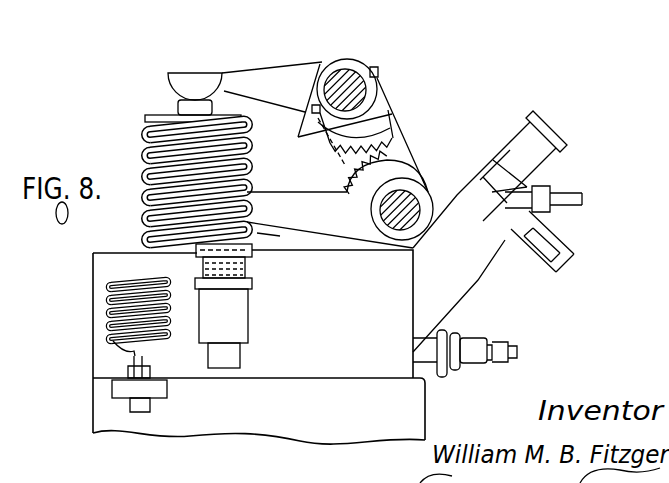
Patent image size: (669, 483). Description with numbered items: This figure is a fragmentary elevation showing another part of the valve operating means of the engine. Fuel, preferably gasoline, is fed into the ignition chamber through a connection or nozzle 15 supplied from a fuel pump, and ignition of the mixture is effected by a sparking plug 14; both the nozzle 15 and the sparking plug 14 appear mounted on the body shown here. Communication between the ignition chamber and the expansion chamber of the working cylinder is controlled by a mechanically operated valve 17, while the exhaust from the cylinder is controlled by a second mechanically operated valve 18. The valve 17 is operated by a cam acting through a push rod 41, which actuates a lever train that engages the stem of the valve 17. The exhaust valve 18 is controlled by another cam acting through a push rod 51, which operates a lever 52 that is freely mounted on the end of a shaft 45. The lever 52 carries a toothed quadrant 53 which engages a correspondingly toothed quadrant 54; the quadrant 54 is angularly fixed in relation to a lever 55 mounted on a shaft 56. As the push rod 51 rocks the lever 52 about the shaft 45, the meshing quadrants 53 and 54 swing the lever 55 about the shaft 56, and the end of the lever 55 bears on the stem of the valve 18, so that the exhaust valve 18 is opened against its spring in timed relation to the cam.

The sparking plug 14 is at (477, 340).
The connection or nozzle 15 is at (547, 173).
The mechanically operated valve 17 is at (281, 237).
The mechanically operated valve 18 is at (177, 112).
The push rod 41 is at (232, 366).
The shaft 45 is at (405, 210).
The push rod 51 is at (252, 268).
The lever 52 is at (250, 201).
The toothed quadrant 53 is at (397, 152).
The toothed quadrant 54 is at (393, 125).
The lever 55 is at (268, 66).
The shaft 56 is at (345, 72).